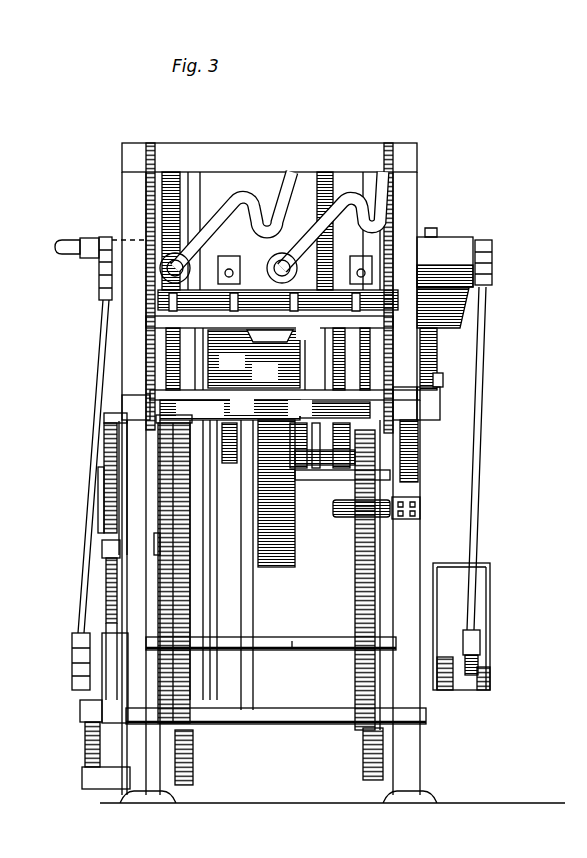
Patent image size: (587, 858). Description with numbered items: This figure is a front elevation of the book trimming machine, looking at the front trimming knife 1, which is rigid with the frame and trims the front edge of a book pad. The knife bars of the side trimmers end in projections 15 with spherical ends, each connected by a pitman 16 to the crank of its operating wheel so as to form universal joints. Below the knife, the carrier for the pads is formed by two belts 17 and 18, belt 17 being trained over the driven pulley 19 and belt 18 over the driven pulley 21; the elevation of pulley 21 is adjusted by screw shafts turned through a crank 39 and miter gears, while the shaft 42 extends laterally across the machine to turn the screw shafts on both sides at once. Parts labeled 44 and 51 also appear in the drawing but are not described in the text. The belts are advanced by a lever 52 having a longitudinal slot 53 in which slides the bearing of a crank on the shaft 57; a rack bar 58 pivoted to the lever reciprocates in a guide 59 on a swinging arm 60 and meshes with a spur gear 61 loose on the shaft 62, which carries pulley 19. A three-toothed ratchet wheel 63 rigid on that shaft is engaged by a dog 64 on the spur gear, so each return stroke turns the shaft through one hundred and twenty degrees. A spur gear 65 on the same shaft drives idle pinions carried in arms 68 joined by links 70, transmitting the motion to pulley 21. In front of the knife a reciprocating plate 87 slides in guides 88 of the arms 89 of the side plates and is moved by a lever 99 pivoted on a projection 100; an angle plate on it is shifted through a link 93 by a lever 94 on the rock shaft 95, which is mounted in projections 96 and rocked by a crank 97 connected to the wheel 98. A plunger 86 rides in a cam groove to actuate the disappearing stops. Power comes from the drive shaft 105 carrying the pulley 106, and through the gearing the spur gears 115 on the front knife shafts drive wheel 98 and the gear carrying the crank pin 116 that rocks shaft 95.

The trimming knife 1 is at (457, 327).
The projection 15 is at (479, 240).
The pitman 16 is at (478, 505).
The belt 17 is at (254, 460).
The belt 18 is at (265, 372).
The driven pulley 19 is at (296, 540).
The driven pulley 21 is at (276, 180).
The crank 39 is at (65, 238).
The shaft 42 is at (105, 237).
The bracket 44 is at (308, 332).
The plate 51 is at (300, 408).
The lever 52 is at (85, 768).
The longitudinal slot 53 is at (92, 736).
The shaft 57 is at (105, 709).
The rack bar 58 is at (78, 676).
The guide 59 is at (104, 556).
The arm 60 is at (98, 518).
The spur gear 61 is at (104, 495).
The shaft 62 is at (188, 409).
The ratchet wheel 63 is at (121, 492).
The dog 64 is at (271, 405).
The spur gear 65 is at (158, 546).
The arm 68 is at (212, 409).
The link 70 is at (306, 451).
The plunger 86 is at (355, 620).
The reciprocating plate 87 is at (420, 430).
The guide 88 is at (395, 397).
The arm 89 is at (415, 408).
The link 93 is at (242, 405).
The lever 94 is at (271, 619).
The shaft 95 is at (276, 730).
The projection 96 is at (141, 483).
The crank 97 is at (215, 560).
The wheel 98 is at (198, 532).
The lever 99 is at (343, 501).
The projection 100 is at (420, 500).
The drive shaft 105 is at (292, 640).
The pulley 106 is at (488, 616).
The spur gear 115 is at (195, 766).
The crank pin 116 is at (188, 670).